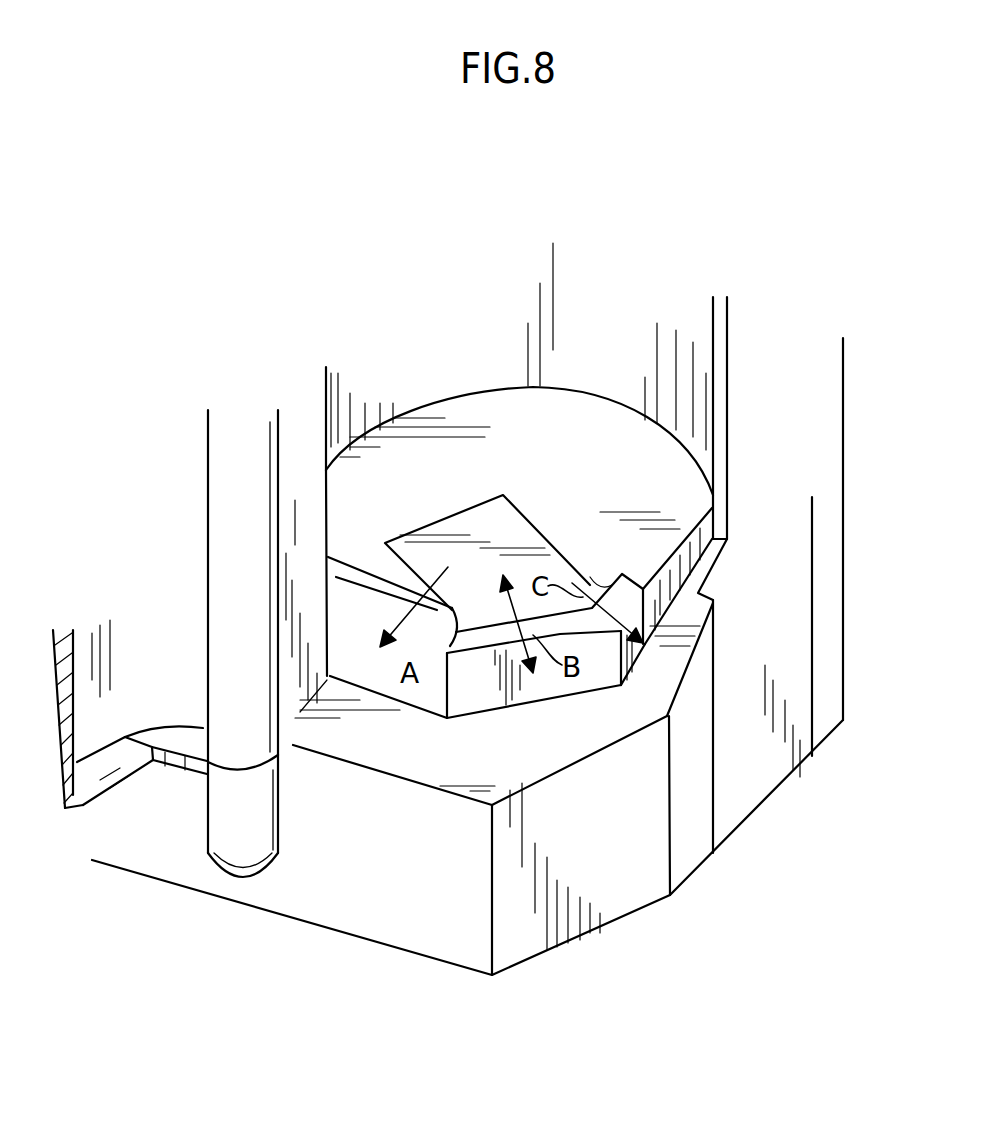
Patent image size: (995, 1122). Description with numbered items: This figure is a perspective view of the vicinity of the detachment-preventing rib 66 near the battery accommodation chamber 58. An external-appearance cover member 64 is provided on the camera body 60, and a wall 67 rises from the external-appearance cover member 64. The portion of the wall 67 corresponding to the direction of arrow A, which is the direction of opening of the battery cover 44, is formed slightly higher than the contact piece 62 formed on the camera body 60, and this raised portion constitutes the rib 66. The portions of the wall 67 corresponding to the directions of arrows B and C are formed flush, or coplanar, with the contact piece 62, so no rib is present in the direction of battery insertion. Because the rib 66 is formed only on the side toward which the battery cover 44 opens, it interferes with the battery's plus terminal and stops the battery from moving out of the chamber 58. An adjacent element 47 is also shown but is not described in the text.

The battery cover 44 is at (97, 727).
The pipe 47 is at (218, 592).
The battery accommodation chamber 58 is at (633, 348).
The camera body 60 is at (800, 428).
The contact piece 62 is at (480, 528).
The external-appearance cover member 64 is at (622, 887).
The detachment-preventing rib 66 is at (388, 587).
The wall 67 is at (472, 686).